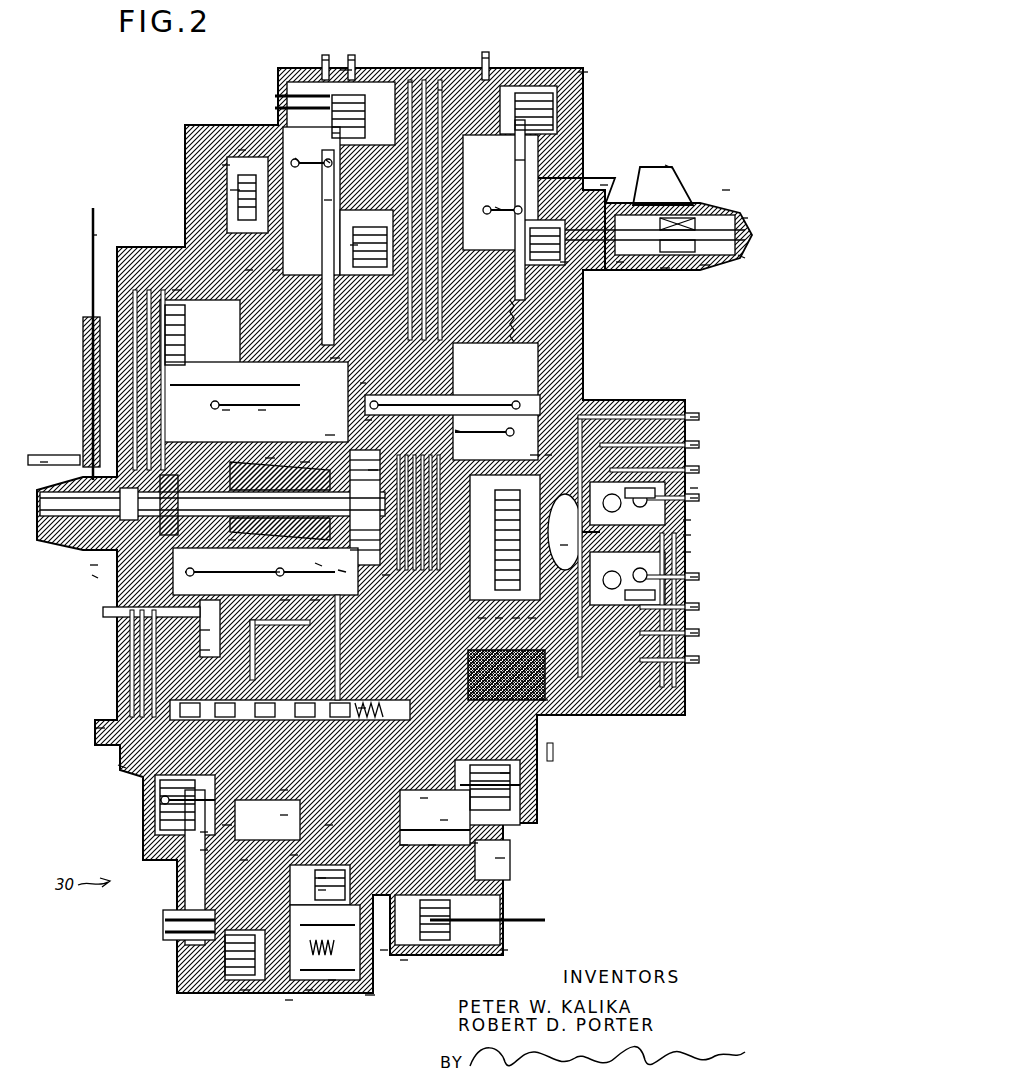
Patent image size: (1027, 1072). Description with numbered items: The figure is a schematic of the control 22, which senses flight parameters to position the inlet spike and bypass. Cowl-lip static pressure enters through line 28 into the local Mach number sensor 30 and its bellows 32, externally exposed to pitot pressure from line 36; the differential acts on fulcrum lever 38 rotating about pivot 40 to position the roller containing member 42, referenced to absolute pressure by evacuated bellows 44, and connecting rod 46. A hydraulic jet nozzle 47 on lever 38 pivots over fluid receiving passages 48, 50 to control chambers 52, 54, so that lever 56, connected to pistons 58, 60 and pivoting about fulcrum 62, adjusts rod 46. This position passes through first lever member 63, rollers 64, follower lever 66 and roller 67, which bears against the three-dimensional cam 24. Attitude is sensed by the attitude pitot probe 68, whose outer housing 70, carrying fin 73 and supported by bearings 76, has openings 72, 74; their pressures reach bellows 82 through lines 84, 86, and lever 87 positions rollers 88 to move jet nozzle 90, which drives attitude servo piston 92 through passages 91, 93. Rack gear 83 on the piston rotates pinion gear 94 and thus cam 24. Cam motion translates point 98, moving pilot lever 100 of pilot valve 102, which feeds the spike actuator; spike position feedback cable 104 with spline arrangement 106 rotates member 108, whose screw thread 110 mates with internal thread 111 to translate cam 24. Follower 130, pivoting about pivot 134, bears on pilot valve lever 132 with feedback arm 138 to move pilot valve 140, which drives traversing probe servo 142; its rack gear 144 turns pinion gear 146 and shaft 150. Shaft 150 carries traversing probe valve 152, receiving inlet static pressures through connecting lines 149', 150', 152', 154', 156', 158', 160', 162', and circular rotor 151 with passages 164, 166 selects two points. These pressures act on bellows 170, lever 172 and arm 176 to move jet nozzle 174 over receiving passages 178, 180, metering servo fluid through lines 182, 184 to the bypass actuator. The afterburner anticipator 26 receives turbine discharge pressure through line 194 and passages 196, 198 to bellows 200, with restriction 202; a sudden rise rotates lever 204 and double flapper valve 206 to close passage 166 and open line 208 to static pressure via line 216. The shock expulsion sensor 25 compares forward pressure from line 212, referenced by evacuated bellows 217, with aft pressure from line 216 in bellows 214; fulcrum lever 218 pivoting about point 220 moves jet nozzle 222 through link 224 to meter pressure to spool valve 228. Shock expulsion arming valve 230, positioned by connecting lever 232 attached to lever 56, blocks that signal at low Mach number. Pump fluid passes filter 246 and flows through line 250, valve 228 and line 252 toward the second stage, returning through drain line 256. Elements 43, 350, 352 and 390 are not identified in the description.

The control 22 is at (600, 76).
The three-dimensional cam 24 is at (270, 456).
The shock expulsion sensor 25 is at (518, 953).
The afterburner anticipator 26 is at (376, 1006).
The line 28 is at (324, 60).
The local Mach number sensor 30 is at (408, 58).
The bellows 32 is at (346, 66).
The line 36 is at (357, 60).
The fulcrum lever 38 is at (334, 133).
The pivot 40 is at (300, 160).
The roller containing member 42 is at (326, 200).
The pivot 43 is at (337, 155).
The evacuated bellows 44 is at (352, 245).
The connecting rod 46 is at (332, 358).
The hydraulic jet nozzle 47 is at (232, 190).
The fluid receiving passage 48 is at (226, 165).
The fluid receiving passage 50 is at (243, 150).
The chamber 52 is at (203, 650).
The chamber 54 is at (250, 270).
The lever 56 is at (226, 412).
The piston 58 is at (276, 270).
The piston 60 is at (203, 630).
The fulcrum 62 is at (262, 412).
The first lever member 63 is at (234, 578).
The rollers 64 is at (276, 572).
The follower lever 66 is at (339, 578).
The roller 67 is at (322, 548).
The attitude pitot probe 68 is at (730, 182).
The outer housing 70 is at (705, 268).
The opening 72 is at (745, 216).
The fin 73 is at (668, 166).
The opening 74 is at (740, 260).
The bearings 76 is at (665, 270).
The bellows 82 is at (564, 266).
The rack gear 83 is at (368, 412).
The line 84 is at (604, 182).
The line 86 is at (620, 264).
The lever 87 is at (517, 160).
The rollers 88 is at (498, 208).
The jet nozzle 90 is at (485, 55).
The passage 91 is at (412, 82).
The attitude servo piston 92 is at (362, 383).
The passage 93 is at (442, 88).
The pinion gear 94 is at (373, 470).
The point 98 is at (309, 559).
The pilot lever 100 is at (315, 600).
The pilot valve 102 is at (285, 600).
The spike position feedback cable 104 is at (93, 235).
The spline arrangement 106 is at (92, 565).
The member 108 is at (94, 576).
The screw thread 110 is at (232, 543).
The internal thread 111 is at (305, 460).
The follower 130 is at (330, 433).
The pilot valve lever 132 is at (535, 455).
The pivot 134 is at (458, 430).
The feedback arm 138 is at (548, 455).
The pilot valve 140 is at (482, 620).
The traversing probe servo 142 is at (532, 620).
The rack gear 144 is at (516, 620).
The pinion gear 146 is at (499, 620).
The connecting line 149' is at (720, 497).
The shaft 150 is at (566, 554).
The connecting line 150' is at (720, 572).
The circular rotor 151 is at (690, 520).
The traversing probe valve 152 is at (715, 482).
The connecting line 152' is at (720, 599).
The connecting line 154' is at (721, 624).
The connecting line 156' is at (722, 649).
The connecting line 158' is at (715, 401).
The connecting line 160' is at (719, 429).
The connecting line 162' is at (719, 457).
The passage 164 is at (690, 535).
The passage 166 is at (690, 552).
The bellows 170 is at (245, 990).
The lever 172 is at (218, 847).
The jet nozzle 174 is at (240, 859).
The arm 176 is at (218, 833).
The receiving passage 178 is at (302, 807).
The receiving passage 180 is at (226, 825).
The line 182 is at (100, 728).
The line 184 is at (100, 745).
The line 194 is at (385, 952).
The passage 196 is at (434, 854).
The passage 198 is at (406, 854).
The bellows 200 is at (332, 875).
The restriction 202 is at (332, 889).
The lever 204 is at (332, 982).
The double flapper valve 206 is at (308, 992).
The line 208 is at (288, 1000).
The line 212 is at (518, 920).
The bellows 214 is at (440, 957).
The line 216 is at (404, 962).
The evacuated bellows 217 is at (505, 773).
The fulcrum lever 218 is at (473, 843).
The point 220 is at (500, 858).
The jet nozzle 222 is at (437, 798).
The link 224 is at (454, 828).
The spool valve 228 is at (120, 766).
The shock expulsion arming valve 230 is at (177, 290).
The connecting lever 232 is at (245, 384).
The filter 246 is at (545, 700).
The line 250 is at (376, 695).
The line 252 is at (44, 462).
The drain line 256 is at (394, 565).
The valve 350 is at (345, 822).
The valve seat 352 is at (296, 856).
The passage 390 is at (297, 777).